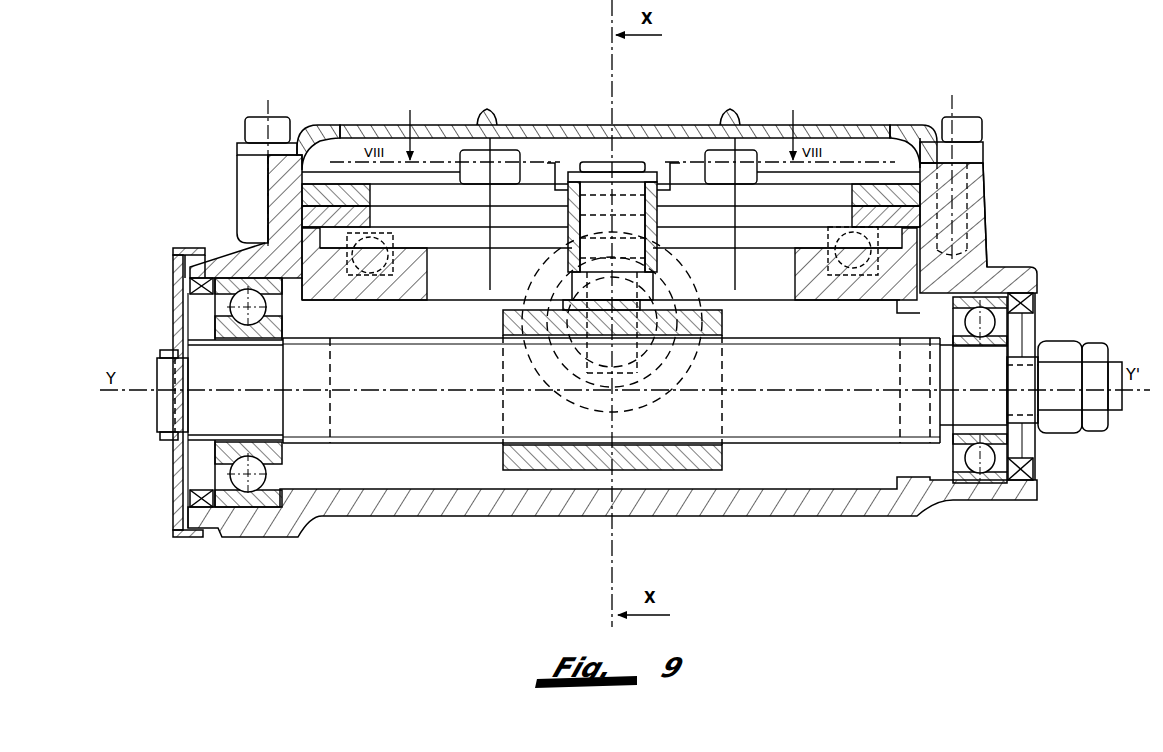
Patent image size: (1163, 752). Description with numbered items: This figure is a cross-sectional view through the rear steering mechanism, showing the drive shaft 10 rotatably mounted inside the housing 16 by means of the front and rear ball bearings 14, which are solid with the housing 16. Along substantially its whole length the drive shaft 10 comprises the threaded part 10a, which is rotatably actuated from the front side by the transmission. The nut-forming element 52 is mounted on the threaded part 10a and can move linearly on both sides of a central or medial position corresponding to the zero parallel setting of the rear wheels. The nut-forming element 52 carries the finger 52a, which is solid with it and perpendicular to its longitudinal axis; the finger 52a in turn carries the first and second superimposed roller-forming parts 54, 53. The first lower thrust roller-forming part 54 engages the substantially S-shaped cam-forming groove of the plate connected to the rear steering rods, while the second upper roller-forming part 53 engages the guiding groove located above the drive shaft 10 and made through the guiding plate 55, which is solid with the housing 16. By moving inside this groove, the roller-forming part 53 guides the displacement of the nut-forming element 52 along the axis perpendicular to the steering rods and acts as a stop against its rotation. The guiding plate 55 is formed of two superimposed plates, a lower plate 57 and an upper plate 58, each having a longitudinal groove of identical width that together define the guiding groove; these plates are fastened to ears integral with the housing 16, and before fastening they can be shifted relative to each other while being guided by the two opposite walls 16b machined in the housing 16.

The drive shaft 10 is at (958, 462).
The threaded part 10a is at (775, 425).
The ball bearings 14 is at (268, 512).
The housing 16 is at (482, 514).
The opposite walls 16b is at (333, 130).
The nut-forming element 52 is at (592, 462).
The finger 52a is at (626, 196).
The second upper roller-forming part 53 is at (554, 198).
The first lower thrust roller-forming part 54 is at (662, 243).
The guiding plate 55 is at (924, 198).
The lower plate 57 is at (930, 218).
The upper plate 58 is at (867, 185).